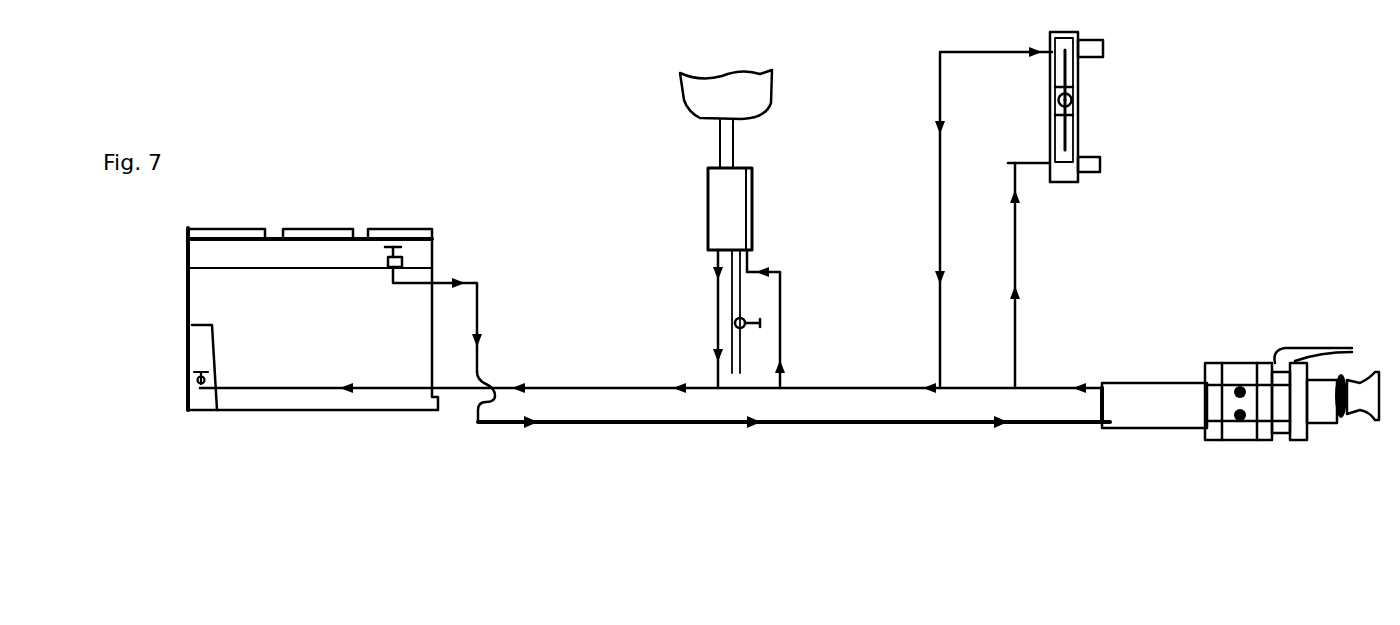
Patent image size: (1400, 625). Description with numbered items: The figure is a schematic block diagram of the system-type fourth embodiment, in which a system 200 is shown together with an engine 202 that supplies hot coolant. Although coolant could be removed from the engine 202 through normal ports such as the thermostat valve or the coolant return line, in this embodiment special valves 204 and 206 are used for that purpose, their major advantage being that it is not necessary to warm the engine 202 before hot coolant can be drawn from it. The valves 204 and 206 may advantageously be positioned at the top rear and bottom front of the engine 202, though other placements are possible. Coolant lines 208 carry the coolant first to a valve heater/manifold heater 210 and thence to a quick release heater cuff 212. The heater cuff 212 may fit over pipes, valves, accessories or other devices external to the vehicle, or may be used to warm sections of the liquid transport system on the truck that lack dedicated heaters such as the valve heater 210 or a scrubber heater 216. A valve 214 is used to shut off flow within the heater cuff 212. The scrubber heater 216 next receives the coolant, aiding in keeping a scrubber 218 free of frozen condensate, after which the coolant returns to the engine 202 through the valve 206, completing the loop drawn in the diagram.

The system 200 is at (573, 186).
The engine 202 is at (224, 228).
The valve 204 is at (403, 262).
The valve 206 is at (222, 395).
The coolant lines 208 is at (564, 421).
The valve heater/manifold heater 210 is at (1240, 440).
The quick release heater cuff 212 is at (1078, 183).
The valve 214 is at (1078, 100).
The scrubber heater 216 is at (708, 212).
The scrubber 218 is at (771, 97).